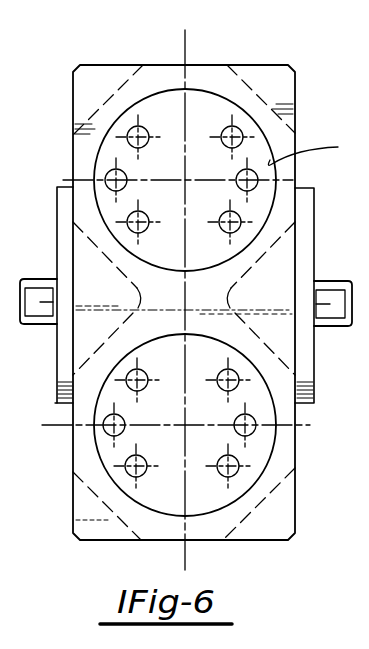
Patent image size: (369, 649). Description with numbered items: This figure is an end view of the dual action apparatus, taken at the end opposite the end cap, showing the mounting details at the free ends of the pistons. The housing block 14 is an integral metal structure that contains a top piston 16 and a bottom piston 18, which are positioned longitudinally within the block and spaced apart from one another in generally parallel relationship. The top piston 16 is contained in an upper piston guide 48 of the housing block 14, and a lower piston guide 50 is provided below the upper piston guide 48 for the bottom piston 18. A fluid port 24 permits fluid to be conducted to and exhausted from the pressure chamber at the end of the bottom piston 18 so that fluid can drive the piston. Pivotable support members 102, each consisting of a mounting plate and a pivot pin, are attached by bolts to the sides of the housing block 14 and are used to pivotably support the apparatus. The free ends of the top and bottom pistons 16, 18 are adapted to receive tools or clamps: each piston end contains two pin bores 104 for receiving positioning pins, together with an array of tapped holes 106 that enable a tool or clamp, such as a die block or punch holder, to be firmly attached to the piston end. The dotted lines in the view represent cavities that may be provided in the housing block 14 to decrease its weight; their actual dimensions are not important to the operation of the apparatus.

The housing block 14 is at (289, 206).
The top piston 16 is at (204, 88).
The bottom piston 18 is at (201, 514).
The fluid port 24 is at (360, 326).
The upper piston guide 48 is at (314, 153).
The lower piston guide 50 is at (266, 451).
The pivotable support members 102 is at (57, 242).
The pin bores 104 is at (233, 180).
The tapped holes 106 is at (225, 132).